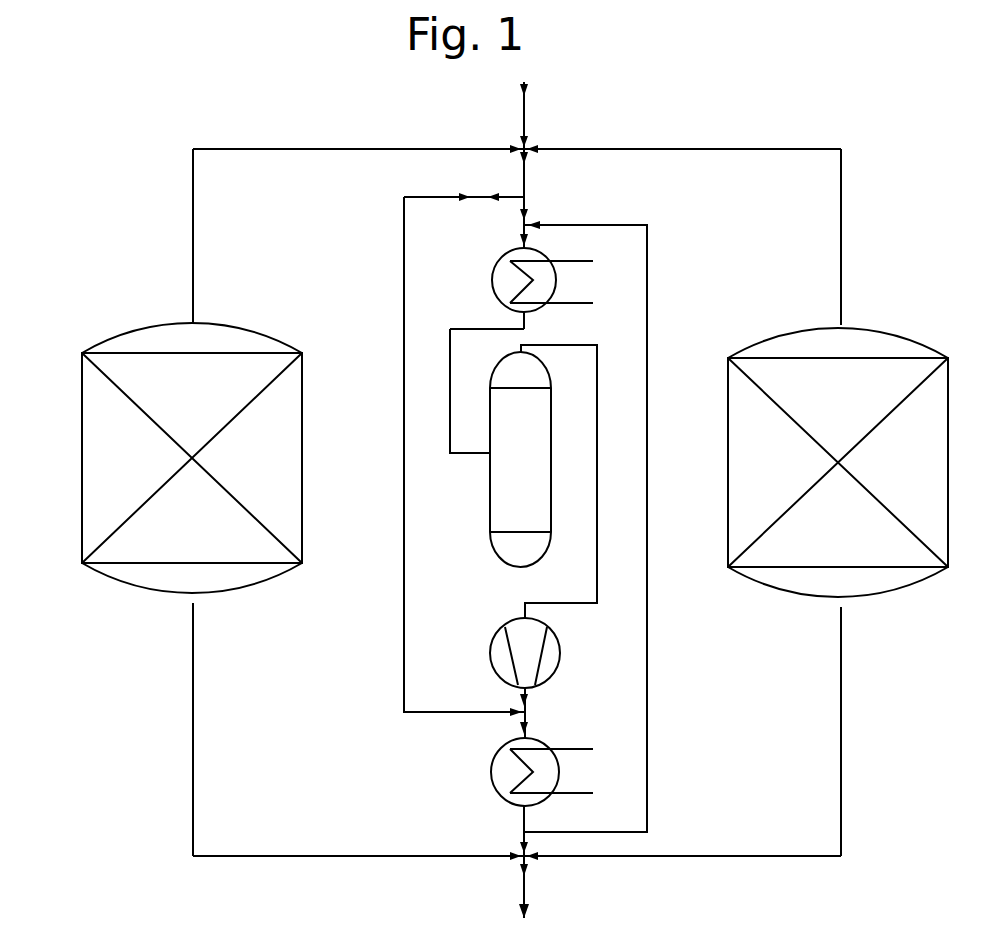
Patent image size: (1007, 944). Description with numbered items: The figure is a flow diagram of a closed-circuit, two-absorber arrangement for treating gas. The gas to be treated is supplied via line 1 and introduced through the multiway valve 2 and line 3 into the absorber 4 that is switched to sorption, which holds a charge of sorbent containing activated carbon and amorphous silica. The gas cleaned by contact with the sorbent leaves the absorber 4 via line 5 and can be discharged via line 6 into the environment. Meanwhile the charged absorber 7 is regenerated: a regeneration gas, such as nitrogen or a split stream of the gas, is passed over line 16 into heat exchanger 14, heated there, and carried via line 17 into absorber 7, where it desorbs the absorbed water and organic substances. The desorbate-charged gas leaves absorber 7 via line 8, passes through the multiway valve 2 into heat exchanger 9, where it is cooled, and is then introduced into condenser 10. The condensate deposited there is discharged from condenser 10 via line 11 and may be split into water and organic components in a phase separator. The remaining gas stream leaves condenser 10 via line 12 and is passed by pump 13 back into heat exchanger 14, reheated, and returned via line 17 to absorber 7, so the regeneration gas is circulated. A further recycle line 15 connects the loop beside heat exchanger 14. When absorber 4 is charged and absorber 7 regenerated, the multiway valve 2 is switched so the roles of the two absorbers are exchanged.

The line 1 is at (527, 88).
The multiway valve 2 is at (518, 144).
The line 3 is at (258, 147).
The absorber 4 is at (82, 500).
The line 5 is at (222, 858).
The line 6 is at (522, 890).
The absorber 7 is at (950, 418).
The line 8 is at (527, 184).
The heat exchanger 9 is at (557, 281).
The condenser 10 is at (552, 445).
The line 11 is at (480, 562).
The line 12 is at (552, 343).
The pump 13 is at (561, 652).
The heat exchanger 14 is at (560, 775).
The recycle line 15 is at (647, 318).
The line 16 is at (403, 368).
The line 17 is at (841, 757).